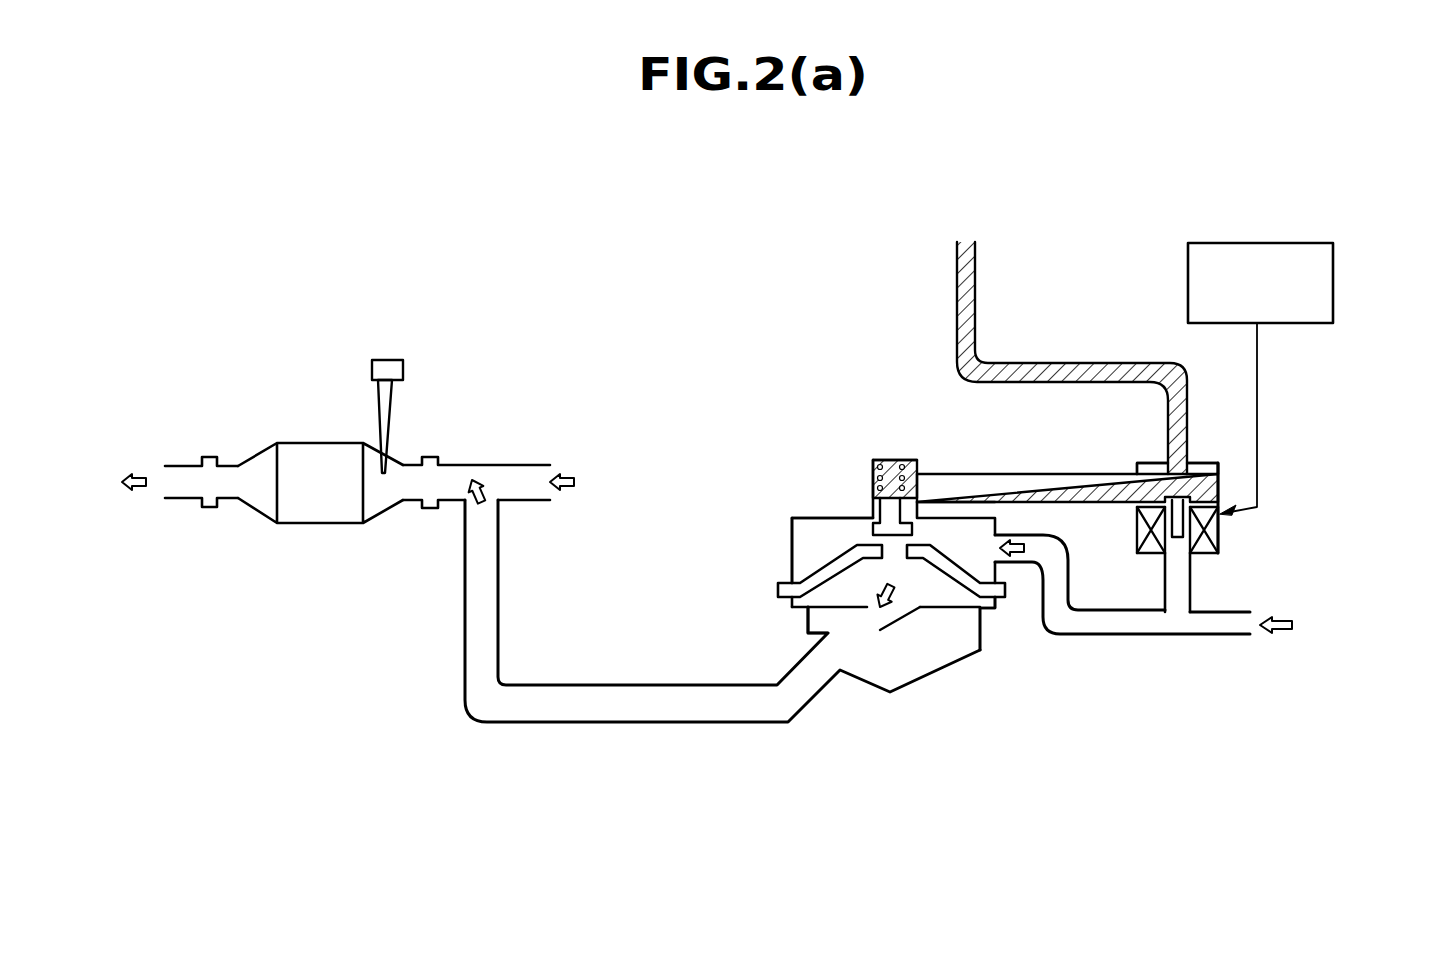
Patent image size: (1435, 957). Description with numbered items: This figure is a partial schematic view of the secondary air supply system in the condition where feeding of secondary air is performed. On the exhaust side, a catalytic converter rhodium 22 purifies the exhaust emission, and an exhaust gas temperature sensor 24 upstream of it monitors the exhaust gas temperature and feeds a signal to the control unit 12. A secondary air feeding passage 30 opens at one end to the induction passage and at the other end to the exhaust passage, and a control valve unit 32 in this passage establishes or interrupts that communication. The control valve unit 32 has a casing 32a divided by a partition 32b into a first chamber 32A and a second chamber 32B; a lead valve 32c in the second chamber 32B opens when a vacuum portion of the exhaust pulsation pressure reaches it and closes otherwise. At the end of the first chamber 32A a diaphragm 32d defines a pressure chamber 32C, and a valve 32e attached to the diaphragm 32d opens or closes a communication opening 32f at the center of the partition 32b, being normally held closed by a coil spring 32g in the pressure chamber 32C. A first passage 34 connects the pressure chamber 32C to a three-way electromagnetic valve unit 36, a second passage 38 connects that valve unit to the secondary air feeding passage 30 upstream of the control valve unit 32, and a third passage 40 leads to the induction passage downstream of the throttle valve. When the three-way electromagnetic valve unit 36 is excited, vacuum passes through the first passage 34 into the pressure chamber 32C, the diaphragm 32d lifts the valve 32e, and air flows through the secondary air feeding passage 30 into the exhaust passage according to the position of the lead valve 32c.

The control unit 12 is at (1205, 243).
The catalytic converter rhodium 22 is at (323, 517).
The exhaust gas temperature sensor 24 is at (400, 372).
The secondary air feeding passage 30 is at (760, 712).
The control valve unit 32 is at (960, 665).
The first chamber 32A is at (813, 530).
The second chamber 32B is at (830, 582).
The casing 32a is at (792, 558).
The partition 32b is at (957, 565).
The lead valve 32c is at (957, 608).
The diaphragm 32d is at (873, 493).
The valve 32e is at (895, 515).
The communication opening 32f is at (895, 543).
The coil spring 32g is at (872, 477).
The pressure chamber 32C is at (890, 460).
The first passage 34 is at (1090, 505).
The three-way electromagnetic valve unit 36 is at (1223, 500).
The second passage 38 is at (1180, 587).
The third passage 40 is at (975, 307).